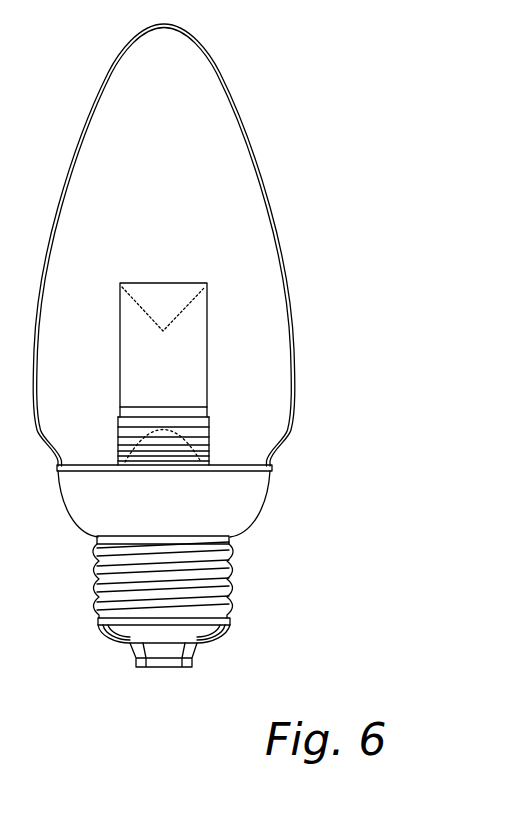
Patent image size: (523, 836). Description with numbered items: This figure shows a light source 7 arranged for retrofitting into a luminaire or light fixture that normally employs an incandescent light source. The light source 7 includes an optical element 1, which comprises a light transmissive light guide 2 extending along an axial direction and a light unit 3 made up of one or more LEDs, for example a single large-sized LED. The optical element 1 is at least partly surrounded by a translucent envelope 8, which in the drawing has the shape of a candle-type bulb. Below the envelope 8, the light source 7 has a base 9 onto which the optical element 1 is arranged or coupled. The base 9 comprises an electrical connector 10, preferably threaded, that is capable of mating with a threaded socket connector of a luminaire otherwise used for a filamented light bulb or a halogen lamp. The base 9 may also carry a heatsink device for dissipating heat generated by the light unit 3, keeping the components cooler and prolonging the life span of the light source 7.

The light source 7 is at (333, 63).
The translucent envelope 8 is at (274, 210).
The optical element 1 is at (253, 387).
The light guide 2 is at (240, 333).
The light unit 3 is at (207, 446).
The base 9 is at (247, 505).
The electrical connector 10 is at (280, 600).